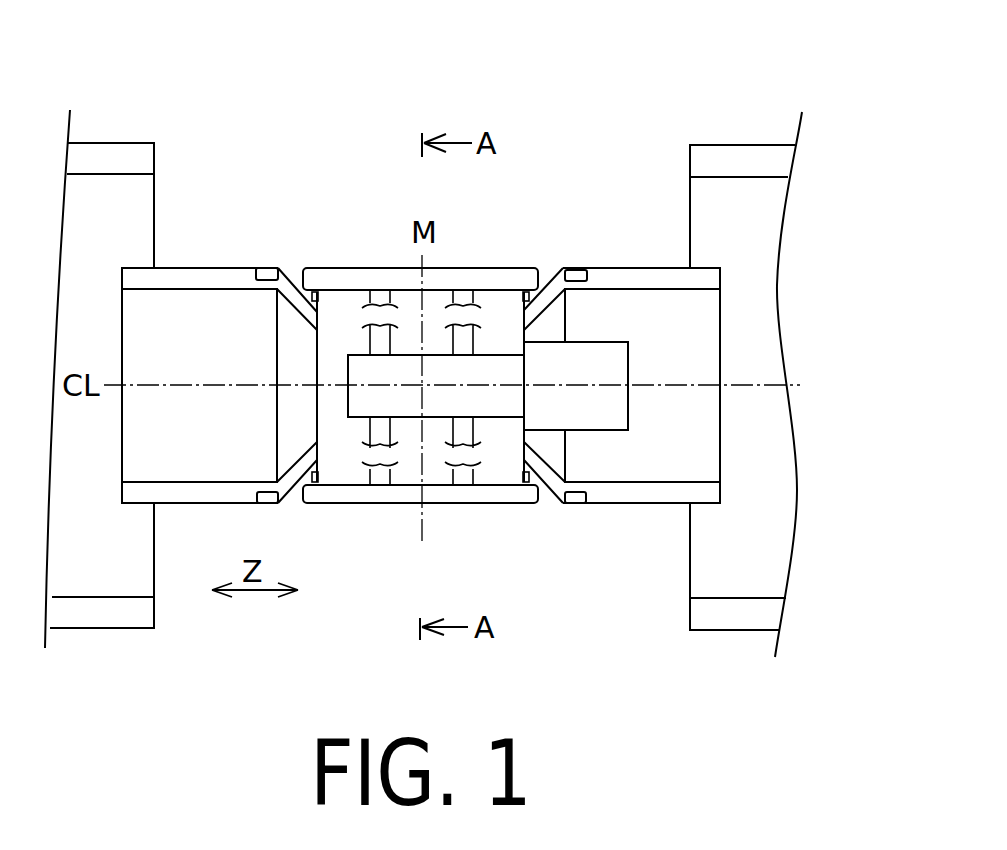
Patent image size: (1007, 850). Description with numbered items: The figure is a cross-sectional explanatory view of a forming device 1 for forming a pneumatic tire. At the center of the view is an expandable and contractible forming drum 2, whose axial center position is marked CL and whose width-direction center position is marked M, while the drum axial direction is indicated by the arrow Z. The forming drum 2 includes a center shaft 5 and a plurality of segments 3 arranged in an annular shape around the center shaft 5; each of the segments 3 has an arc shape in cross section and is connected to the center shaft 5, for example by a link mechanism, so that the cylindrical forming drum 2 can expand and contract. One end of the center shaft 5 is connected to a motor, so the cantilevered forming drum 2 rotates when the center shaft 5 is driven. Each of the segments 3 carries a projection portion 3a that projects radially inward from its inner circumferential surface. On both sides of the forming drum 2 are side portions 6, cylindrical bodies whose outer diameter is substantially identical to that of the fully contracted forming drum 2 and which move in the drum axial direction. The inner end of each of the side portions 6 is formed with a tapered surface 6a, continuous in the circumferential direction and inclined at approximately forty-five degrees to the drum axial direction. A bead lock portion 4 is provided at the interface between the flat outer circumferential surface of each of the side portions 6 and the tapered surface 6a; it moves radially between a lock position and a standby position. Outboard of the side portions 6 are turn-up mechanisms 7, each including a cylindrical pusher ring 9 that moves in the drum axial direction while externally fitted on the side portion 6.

The forming device 1 is at (526, 145).
The forming drum 2 is at (484, 258).
The segments 3 is at (370, 270).
The projection portion 3a is at (318, 298).
The bead lock portion 4 is at (268, 268).
The center shaft 5 is at (355, 373).
The side portions 6 is at (208, 268).
The tapered surface 6a is at (311, 295).
The turn-up mechanisms 7 is at (190, 147).
The pusher ring 9 is at (154, 198).